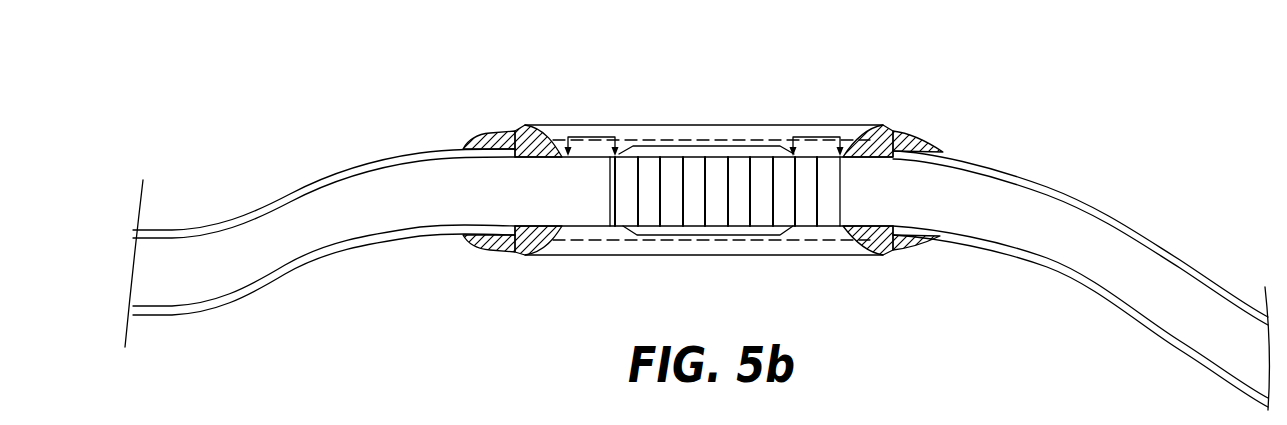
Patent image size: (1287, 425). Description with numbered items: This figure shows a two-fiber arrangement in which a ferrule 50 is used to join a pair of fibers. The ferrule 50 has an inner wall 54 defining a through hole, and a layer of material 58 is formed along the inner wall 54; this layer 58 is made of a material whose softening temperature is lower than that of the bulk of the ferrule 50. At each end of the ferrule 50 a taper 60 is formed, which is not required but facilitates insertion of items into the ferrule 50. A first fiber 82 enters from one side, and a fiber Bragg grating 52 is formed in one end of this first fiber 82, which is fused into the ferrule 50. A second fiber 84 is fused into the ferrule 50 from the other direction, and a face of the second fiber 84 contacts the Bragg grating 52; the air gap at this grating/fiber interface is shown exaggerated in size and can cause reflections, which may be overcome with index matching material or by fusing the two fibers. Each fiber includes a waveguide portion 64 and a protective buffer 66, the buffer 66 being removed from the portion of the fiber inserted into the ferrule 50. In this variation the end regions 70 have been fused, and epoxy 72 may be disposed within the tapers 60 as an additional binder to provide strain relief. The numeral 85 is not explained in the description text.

The ferrule 50 is at (763, 117).
The fiber Bragg grating 52 is at (883, 188).
The inner wall 54 is at (702, 138).
The layer of material 58 is at (685, 243).
The taper 60 is at (500, 243).
The waveguide portion 64 is at (522, 185).
The protective buffer 66 is at (1130, 235).
The end regions 70 is at (600, 138).
The epoxy 72 is at (470, 237).
The first fiber 82 is at (1137, 333).
The second fiber 84 is at (297, 292).
The finned insert 85 is at (611, 197).